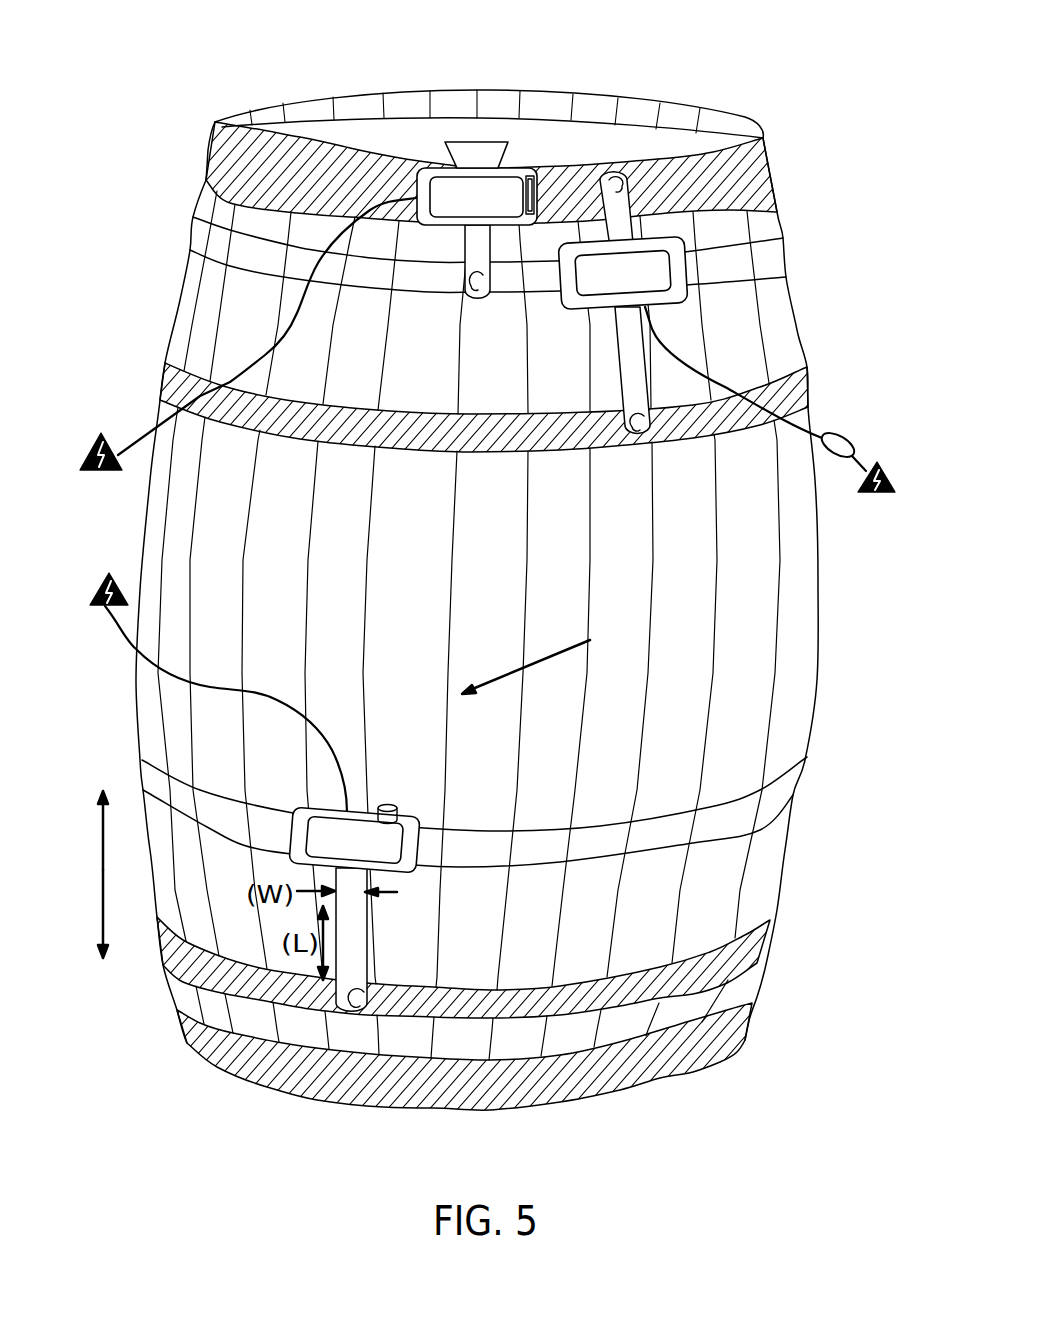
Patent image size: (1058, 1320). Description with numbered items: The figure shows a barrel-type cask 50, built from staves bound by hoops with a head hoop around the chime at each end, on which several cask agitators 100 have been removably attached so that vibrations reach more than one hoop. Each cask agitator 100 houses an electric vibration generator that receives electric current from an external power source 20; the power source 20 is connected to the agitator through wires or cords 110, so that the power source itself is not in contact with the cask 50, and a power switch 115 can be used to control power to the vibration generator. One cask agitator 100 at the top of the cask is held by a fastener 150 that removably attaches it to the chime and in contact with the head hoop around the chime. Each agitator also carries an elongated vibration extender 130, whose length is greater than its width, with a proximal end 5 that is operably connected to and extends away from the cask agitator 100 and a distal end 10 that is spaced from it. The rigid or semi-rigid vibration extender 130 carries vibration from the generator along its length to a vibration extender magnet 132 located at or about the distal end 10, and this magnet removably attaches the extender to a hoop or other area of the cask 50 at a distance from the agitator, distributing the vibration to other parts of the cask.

The cask 50 is at (799, 108).
The cask agitator 100 is at (417, 163).
The wires or cords 110 is at (244, 362).
The power switch 115 is at (536, 190).
The vibration extender 130 is at (470, 255).
The vibration extender magnet 132 is at (478, 273).
The fastener 150 is at (467, 139).
The power source 20 is at (90, 437).
The proximal end 5 is at (99, 813).
The distal end 10 is at (112, 934).